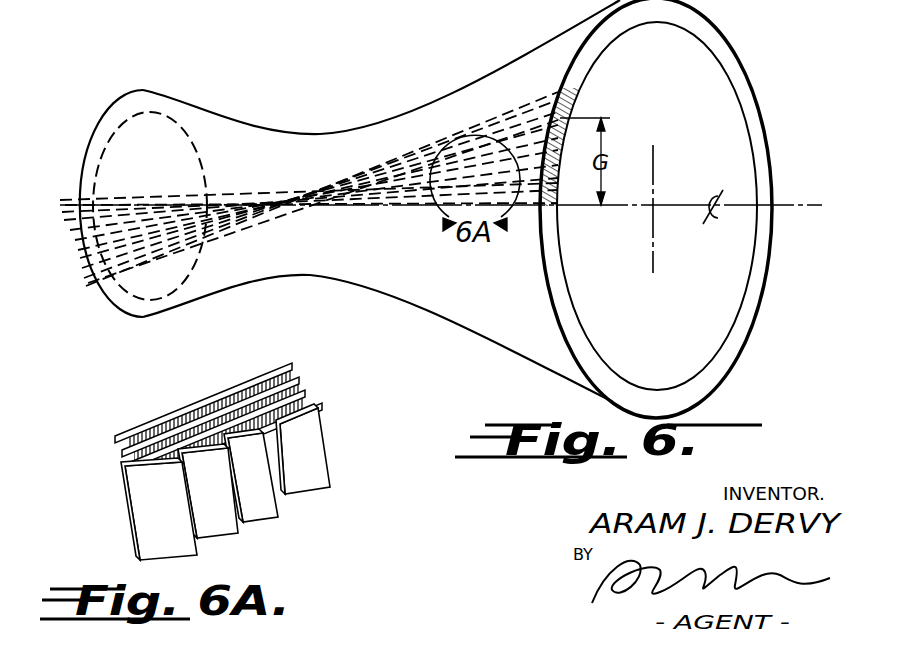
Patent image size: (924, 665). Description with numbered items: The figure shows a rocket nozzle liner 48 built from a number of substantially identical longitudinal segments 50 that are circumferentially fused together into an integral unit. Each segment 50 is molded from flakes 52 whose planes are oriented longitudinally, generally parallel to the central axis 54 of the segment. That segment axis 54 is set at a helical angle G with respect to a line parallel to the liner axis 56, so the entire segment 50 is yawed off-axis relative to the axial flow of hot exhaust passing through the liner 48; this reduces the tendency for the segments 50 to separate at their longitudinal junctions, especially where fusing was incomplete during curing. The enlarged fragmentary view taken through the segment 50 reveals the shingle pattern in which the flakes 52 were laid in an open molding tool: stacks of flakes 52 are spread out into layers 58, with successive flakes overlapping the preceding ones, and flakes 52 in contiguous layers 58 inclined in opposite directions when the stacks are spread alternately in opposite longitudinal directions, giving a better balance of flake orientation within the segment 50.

In FIG. 6, the rocket nozzle liner 48 is at (747, 63).
In FIG. 6, the longitudinal segment 50 is at (240, 193).
In FIG. 6, the flakes 52 is at (498, 118).
In FIG. 6A, the flakes 52 is at (293, 485).
In FIG. 6, the central axis of the segment 54 is at (568, 130).
In FIG. 6, the liner axis 56 is at (785, 205).
In FIG. 6A, the layers 58 is at (135, 498).